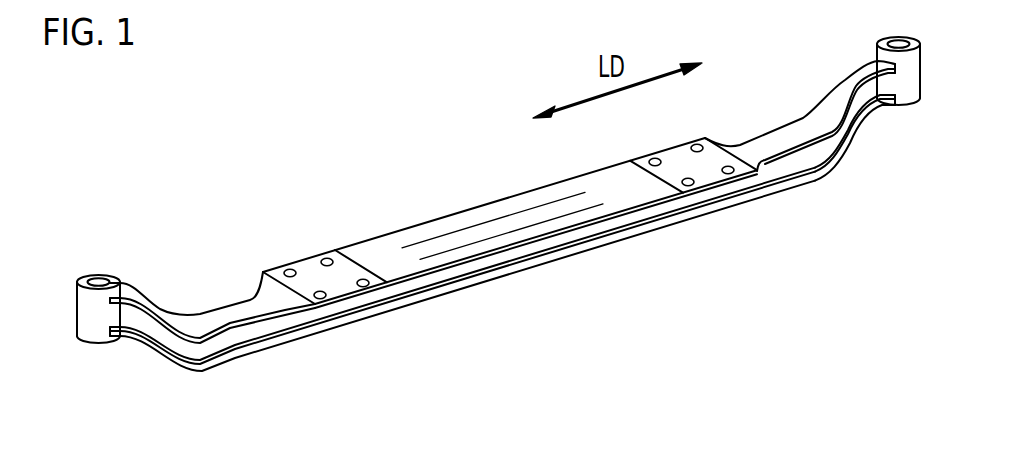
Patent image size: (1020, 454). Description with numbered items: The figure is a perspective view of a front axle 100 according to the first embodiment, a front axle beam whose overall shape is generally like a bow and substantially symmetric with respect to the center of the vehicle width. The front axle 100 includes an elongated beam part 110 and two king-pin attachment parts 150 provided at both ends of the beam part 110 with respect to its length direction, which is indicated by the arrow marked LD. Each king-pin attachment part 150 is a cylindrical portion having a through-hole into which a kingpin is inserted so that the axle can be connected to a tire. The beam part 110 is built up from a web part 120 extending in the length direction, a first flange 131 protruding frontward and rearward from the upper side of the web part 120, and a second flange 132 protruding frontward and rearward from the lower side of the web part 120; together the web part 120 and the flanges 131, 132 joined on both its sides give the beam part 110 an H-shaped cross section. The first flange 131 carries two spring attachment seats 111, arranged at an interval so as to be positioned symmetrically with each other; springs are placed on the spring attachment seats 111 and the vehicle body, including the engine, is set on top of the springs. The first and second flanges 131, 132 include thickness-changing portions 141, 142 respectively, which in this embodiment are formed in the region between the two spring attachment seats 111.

The front axle 100 is at (167, 147).
The beam part 110 is at (567, 391).
The spring attachment seat 111 is at (312, 270).
The web part 120 is at (453, 276).
The first flange 131 is at (430, 268).
The second flange 132 is at (513, 265).
The thickness-changing portion 141 is at (520, 227).
The thickness-changing portion 142 is at (566, 267).
The king-pin attachment part 150 is at (98, 340).